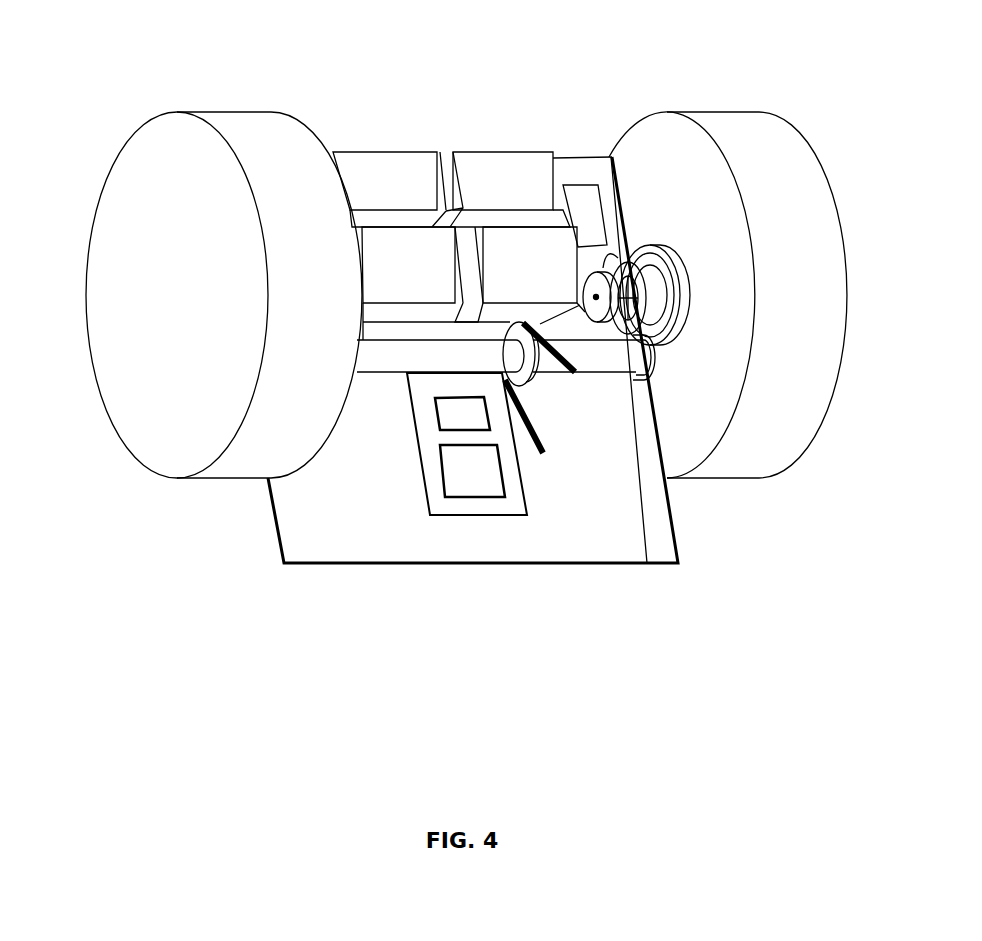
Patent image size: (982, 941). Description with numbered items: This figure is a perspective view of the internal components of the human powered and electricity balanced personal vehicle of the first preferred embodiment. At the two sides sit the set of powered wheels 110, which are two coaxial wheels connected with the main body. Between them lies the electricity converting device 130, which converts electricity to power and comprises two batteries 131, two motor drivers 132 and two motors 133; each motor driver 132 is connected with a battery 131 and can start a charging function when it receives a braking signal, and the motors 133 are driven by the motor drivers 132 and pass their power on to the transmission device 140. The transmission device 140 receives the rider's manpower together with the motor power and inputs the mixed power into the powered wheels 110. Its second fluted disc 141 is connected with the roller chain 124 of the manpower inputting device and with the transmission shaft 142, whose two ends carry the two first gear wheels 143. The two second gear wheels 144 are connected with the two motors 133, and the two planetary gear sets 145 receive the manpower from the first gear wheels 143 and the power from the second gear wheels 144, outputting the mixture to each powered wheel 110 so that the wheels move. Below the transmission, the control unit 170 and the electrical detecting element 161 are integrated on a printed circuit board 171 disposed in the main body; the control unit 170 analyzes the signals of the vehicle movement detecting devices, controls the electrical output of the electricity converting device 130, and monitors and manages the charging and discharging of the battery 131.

The powered wheels 110 is at (84, 370).
The roller chain 124 is at (545, 465).
The electricity converting device 130 is at (474, 167).
The batteries 131 is at (397, 152).
The motor drivers 132 is at (585, 153).
The motors 133 is at (380, 247).
The transmission device 140 is at (575, 495).
The second fluted disc 141 is at (532, 385).
The transmission shaft 142 is at (603, 375).
The first gear wheels 143 is at (662, 362).
The second gear wheels 144 is at (626, 378).
The planetary gear sets 145 is at (688, 287).
The electrical detecting element 161 is at (437, 407).
The control unit 170 is at (368, 518).
The printed circuit board 171 is at (413, 493).